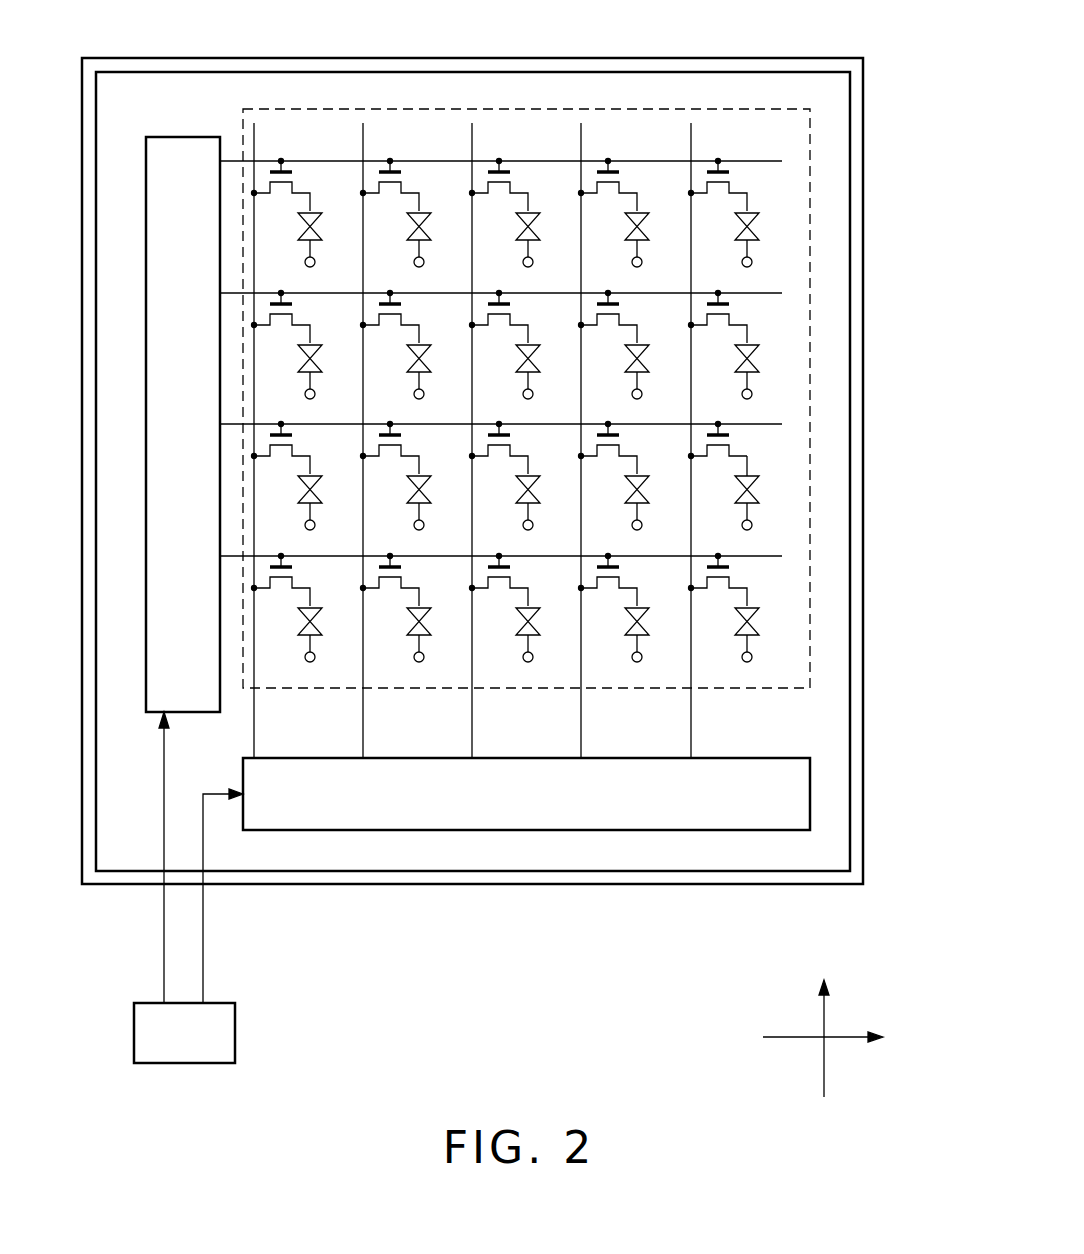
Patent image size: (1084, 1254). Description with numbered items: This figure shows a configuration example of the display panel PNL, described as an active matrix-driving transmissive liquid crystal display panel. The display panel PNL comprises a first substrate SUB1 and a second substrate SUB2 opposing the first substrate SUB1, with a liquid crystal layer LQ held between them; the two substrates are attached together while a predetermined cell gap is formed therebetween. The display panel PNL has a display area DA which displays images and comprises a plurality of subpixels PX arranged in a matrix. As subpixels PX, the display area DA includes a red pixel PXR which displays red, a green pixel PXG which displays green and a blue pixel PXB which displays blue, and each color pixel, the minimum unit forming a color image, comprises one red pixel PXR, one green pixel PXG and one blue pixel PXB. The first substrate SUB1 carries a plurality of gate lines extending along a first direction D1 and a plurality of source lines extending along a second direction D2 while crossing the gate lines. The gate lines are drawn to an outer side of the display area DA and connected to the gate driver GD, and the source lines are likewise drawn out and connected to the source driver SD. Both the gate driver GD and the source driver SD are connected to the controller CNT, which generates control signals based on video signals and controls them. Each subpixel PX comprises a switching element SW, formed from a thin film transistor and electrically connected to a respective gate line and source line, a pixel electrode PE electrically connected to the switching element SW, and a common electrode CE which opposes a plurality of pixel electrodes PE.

The display panel PNL is at (472, 513).
The first substrate SUB1 is at (398, 885).
The second substrate SUB2 is at (512, 872).
The gate driver GD is at (183, 424).
The source driver SD is at (526, 794).
The controller CNT is at (188, 887).
The display area DA is at (810, 654).
The red pixel PXR is at (334, 176).
The green pixel PXG is at (444, 176).
The blue pixel PXB is at (556, 176).
The subpixel PX is at (806, 487).
The switching element SW is at (719, 464).
The pixel electrode PE is at (748, 462).
The liquid crystal layer LQ is at (760, 498).
The common electrode CE is at (743, 521).
The first direction D1 is at (842, 1037).
The second direction D2 is at (823, 1022).